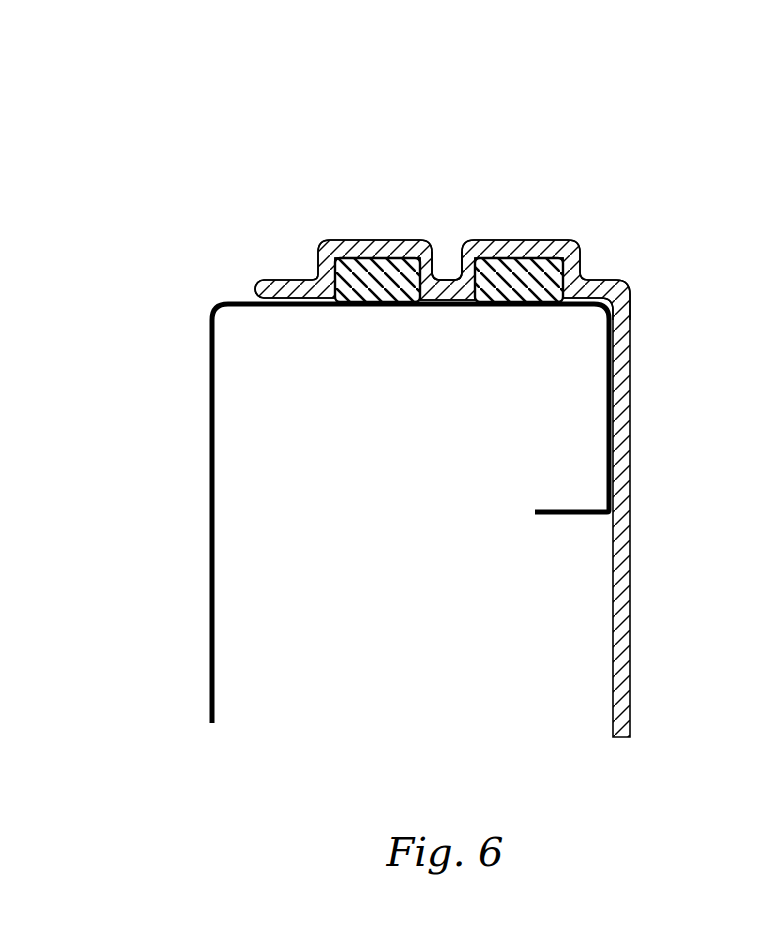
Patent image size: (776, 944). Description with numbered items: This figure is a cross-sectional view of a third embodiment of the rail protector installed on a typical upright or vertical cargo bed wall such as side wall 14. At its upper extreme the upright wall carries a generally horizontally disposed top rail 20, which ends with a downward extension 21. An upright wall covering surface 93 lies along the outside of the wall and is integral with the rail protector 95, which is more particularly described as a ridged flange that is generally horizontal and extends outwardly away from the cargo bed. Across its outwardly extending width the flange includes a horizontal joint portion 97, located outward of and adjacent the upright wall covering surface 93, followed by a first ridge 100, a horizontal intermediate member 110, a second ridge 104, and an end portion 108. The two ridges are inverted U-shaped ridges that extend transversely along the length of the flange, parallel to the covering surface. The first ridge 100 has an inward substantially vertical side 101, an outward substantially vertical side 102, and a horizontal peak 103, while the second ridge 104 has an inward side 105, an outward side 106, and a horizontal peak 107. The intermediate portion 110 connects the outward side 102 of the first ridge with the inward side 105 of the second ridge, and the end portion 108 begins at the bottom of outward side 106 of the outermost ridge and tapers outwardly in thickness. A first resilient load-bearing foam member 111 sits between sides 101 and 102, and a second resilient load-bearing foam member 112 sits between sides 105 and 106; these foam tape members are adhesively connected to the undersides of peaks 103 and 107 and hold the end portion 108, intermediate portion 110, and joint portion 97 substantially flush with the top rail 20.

The side wall 14 is at (208, 596).
The top rail 20 is at (268, 307).
The downward extension 21 is at (609, 444).
The upright wall covering surface 93 is at (630, 641).
The rail protector 95 is at (449, 124).
The horizontal joint portion 97 is at (590, 271).
The first ridge 100 is at (528, 188).
The inward substantially vertical side 101 is at (583, 267).
The outward substantially vertical side 102 is at (454, 263).
The horizontal peak 103 is at (548, 239).
The second ridge 104 is at (380, 184).
The inward substantially vertical side 105 is at (440, 252).
The outward substantially vertical side 106 is at (318, 268).
The horizontal peak 107 is at (348, 239).
The end portion 108 is at (266, 292).
The horizontal intermediate portion 110 is at (447, 306).
The first resilient load-bearing foam member 111 is at (515, 312).
The second resilient load-bearing foam member 112 is at (373, 305).